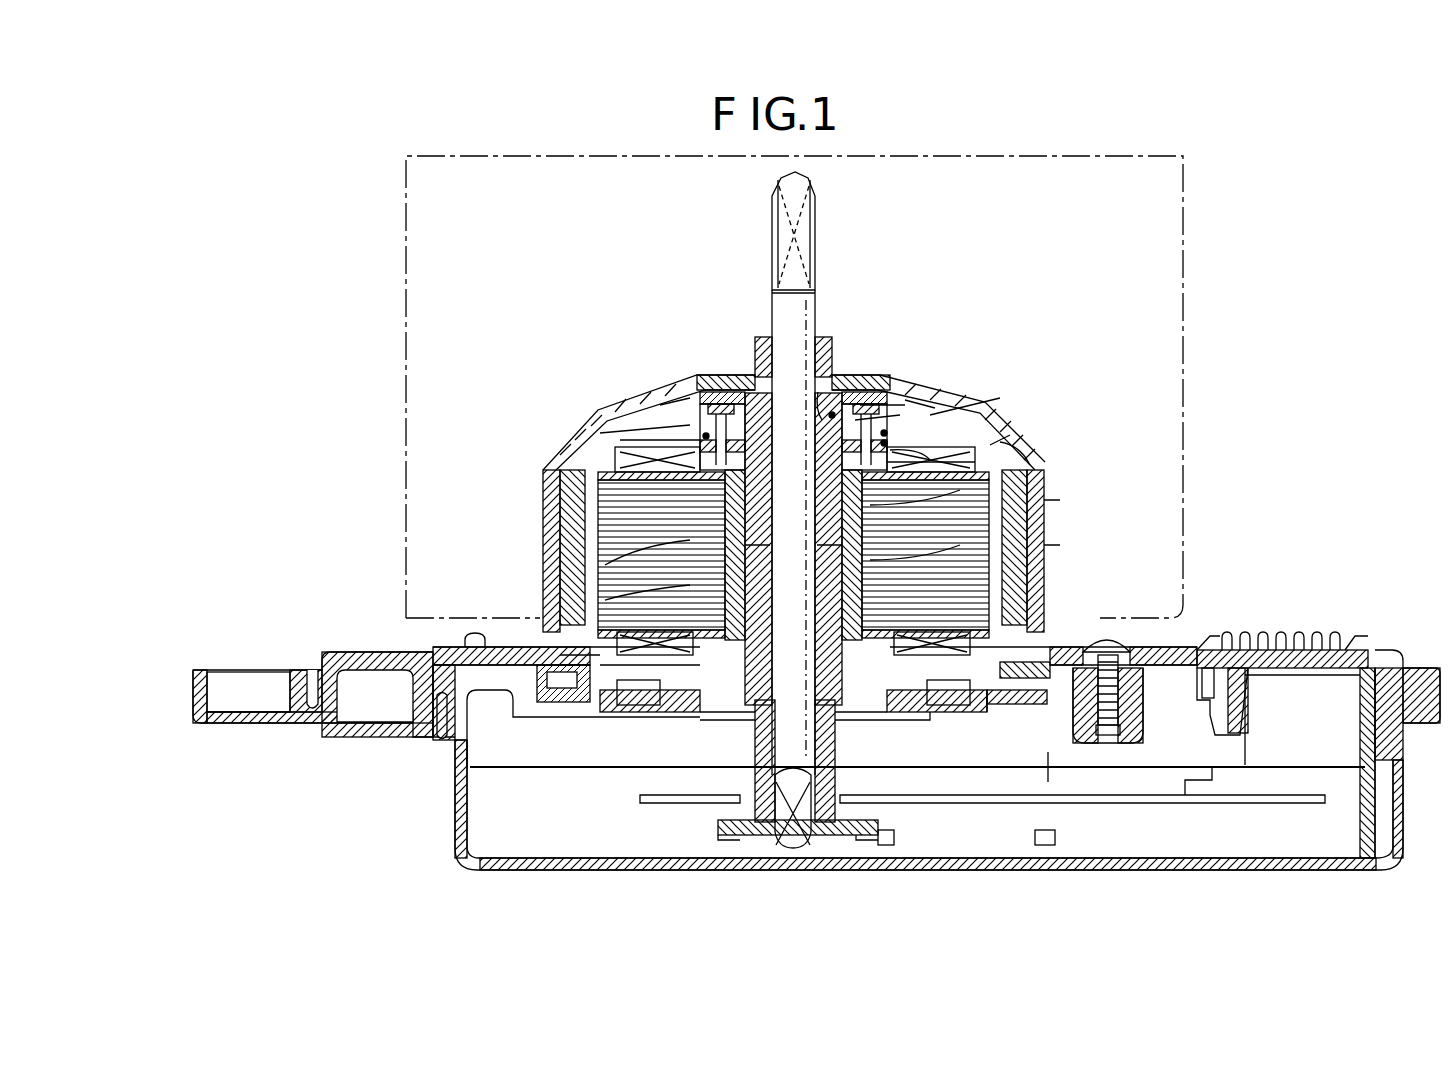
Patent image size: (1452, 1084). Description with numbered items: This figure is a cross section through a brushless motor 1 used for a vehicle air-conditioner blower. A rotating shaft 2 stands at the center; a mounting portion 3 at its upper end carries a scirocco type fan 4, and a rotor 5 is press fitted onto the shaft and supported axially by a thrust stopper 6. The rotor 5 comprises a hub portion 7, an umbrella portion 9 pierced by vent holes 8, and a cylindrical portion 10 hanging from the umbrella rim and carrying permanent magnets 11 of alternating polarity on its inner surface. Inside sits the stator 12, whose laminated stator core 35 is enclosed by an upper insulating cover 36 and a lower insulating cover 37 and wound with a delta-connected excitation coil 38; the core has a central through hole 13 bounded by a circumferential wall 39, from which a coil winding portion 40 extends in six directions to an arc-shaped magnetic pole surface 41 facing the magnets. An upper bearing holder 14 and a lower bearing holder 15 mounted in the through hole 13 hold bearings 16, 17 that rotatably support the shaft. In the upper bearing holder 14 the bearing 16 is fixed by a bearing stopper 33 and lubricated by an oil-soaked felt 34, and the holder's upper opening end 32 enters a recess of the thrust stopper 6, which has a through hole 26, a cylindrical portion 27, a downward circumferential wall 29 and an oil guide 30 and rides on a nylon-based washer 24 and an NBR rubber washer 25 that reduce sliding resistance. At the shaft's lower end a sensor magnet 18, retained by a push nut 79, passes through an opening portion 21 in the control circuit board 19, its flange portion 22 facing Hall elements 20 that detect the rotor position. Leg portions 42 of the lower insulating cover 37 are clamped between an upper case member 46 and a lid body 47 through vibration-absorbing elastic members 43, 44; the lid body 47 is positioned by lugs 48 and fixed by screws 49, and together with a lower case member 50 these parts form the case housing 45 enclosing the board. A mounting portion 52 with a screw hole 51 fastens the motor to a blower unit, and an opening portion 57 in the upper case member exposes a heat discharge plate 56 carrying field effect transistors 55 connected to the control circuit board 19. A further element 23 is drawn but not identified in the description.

The brushless motor 1 is at (1310, 496).
The rotating shaft 2 is at (805, 318).
The mounting portion 3 is at (815, 228).
The scirocco type fan 4 is at (1072, 152).
The rotor 5 is at (1000, 420).
The thrust stopper 6 is at (840, 415).
The hub portion 7 is at (760, 360).
The vent holes 8 is at (660, 410).
The umbrella portion 9 is at (930, 400).
The cylindrical portion 10 is at (1043, 535).
The permanent magnets 11 is at (570, 522).
The stator 12 is at (1010, 440).
The through hole 13 is at (1000, 575).
The upper bearing holder 14 is at (1000, 462).
The lower bearing holder 15 is at (1040, 612).
The bearing 16 is at (680, 458).
The bearing 17 is at (770, 782).
The sensor magnet 18 is at (830, 735).
The control circuit board 19 is at (1105, 772).
The Hall elements 20 is at (870, 725).
The opening portion 21 is at (880, 722).
The flange portion 22 is at (735, 826).
The support 23 is at (870, 712).
The nylon-based washer 24 is at (885, 408).
The washer 25 is at (860, 420).
The through hole 26 is at (822, 400).
The cylindrical portion 27 is at (748, 392).
The circumferential wall 29 is at (690, 420).
The oil guide 30 is at (722, 412).
The upper opening end 32 is at (645, 432).
The bearing stopper 33 is at (885, 424).
The felt 34 is at (895, 452).
The stator core 35 is at (620, 500).
The upper insulating cover 36 is at (705, 468).
The lower insulating cover 37 is at (615, 740).
The excitation coil 38 is at (560, 660).
The circumferential wall 39 is at (1033, 532).
The coil winding portion 40 is at (635, 590).
The magnetic pole surface 41 is at (640, 565).
The leg portions 42 is at (560, 748).
The elastic member 43 is at (530, 660).
The elastic member 44 is at (530, 715).
The case housing 45 is at (1356, 612).
The upper case member 46 is at (335, 660).
The lid body 47 is at (440, 662).
The lugs 48 is at (475, 638).
The screws 49 is at (1120, 650).
The lower case member 50 is at (1220, 865).
The screw hole 51 is at (242, 705).
The mounting portion 52 is at (212, 708).
The field effect transistors 55 is at (1225, 732).
The heat discharge plate 56 is at (1355, 648).
The opening portion 57 is at (1400, 668).
The push nut 79 is at (790, 822).